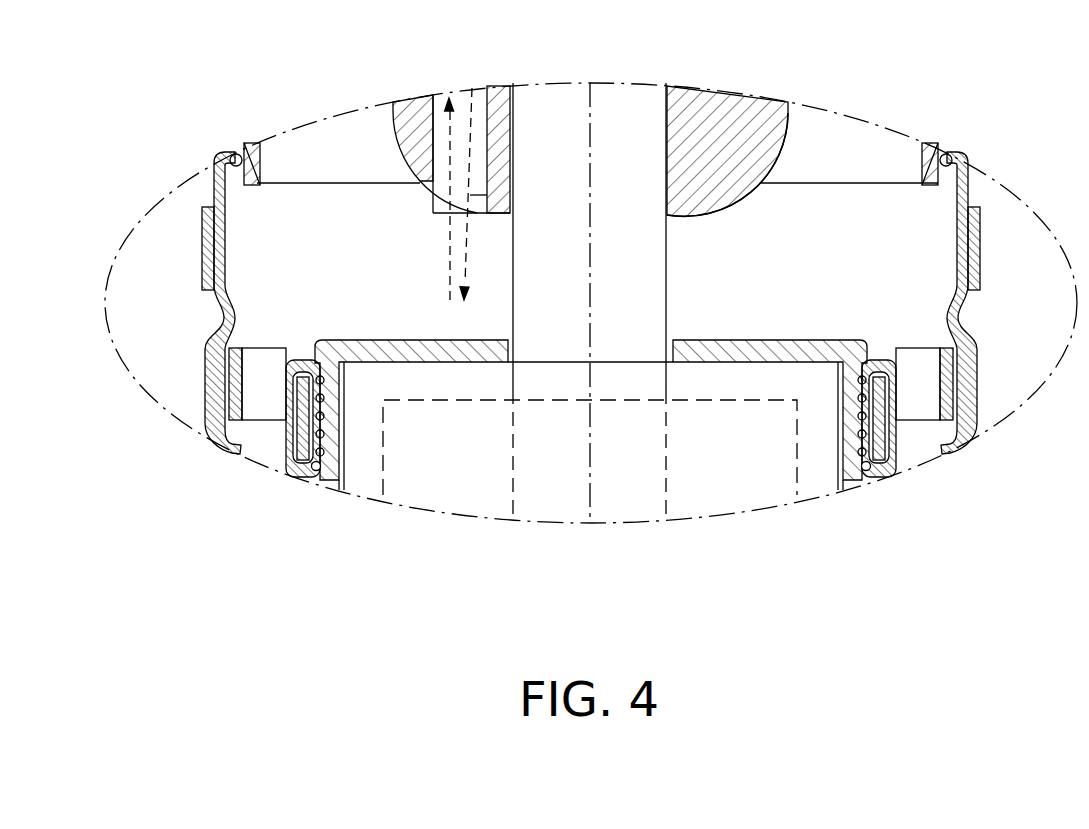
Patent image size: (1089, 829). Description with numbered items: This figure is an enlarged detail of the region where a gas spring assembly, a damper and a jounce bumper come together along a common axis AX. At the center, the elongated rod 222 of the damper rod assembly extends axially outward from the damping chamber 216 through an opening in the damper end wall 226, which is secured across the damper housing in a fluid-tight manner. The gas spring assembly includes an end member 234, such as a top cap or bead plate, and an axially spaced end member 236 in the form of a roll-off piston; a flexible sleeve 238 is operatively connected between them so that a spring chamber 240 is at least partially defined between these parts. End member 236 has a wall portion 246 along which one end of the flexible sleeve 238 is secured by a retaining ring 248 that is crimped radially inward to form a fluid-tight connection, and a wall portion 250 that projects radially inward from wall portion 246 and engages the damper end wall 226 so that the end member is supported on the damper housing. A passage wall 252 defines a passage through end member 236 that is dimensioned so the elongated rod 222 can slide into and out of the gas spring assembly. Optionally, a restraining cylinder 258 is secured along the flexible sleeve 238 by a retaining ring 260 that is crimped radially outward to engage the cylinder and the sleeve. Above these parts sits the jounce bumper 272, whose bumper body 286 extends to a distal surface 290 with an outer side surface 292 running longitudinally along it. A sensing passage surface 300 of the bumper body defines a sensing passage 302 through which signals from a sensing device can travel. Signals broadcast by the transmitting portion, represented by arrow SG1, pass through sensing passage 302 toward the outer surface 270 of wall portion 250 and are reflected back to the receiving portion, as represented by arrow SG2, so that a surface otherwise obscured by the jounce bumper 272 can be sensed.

The damping chamber 216 is at (475, 490).
The elongated rod 222 is at (633, 97).
The damper end wall 226 is at (440, 383).
The end member 234 is at (909, 158).
The end member 236 is at (864, 497).
The flexible sleeve 238 is at (217, 250).
The spring chamber 240 is at (925, 215).
The wall portion 246 is at (852, 423).
The retaining ring 248 is at (890, 428).
The wall portion 250 is at (783, 355).
The passage wall 252 is at (673, 352).
The restraining cylinder 258 is at (220, 313).
The retaining ring 260 is at (233, 385).
The outer surface 270 is at (388, 322).
The jounce bumper 272 is at (790, 137).
The bumper body 286 is at (748, 97).
The distal surface 290 is at (668, 215).
The outer side surface 292 is at (394, 117).
The sensing passage surface 300 is at (433, 140).
The sensing passage 302 is at (456, 90).
The transmitted signal arrow SG1 is at (487, 195).
The reflected signal arrow SG2 is at (453, 247).
The axis AX is at (590, 505).